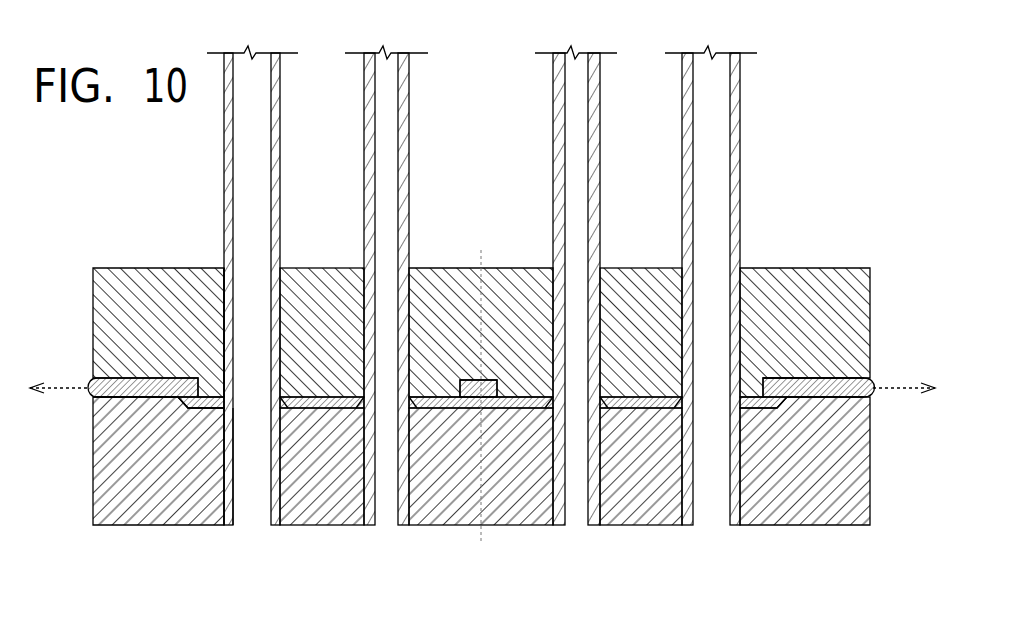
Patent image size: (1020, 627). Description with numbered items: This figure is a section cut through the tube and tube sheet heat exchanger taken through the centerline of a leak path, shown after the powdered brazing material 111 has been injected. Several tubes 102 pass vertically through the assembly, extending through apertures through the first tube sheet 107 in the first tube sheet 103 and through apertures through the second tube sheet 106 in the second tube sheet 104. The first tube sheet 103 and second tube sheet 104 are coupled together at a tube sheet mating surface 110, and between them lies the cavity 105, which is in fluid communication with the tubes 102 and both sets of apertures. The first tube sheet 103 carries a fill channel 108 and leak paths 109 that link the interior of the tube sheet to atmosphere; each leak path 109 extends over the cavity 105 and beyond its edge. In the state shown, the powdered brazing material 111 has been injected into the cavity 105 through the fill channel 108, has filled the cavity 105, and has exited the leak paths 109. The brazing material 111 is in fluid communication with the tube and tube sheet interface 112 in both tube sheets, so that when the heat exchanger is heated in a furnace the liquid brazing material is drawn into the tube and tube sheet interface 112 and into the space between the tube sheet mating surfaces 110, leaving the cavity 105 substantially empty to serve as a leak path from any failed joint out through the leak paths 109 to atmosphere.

The tubes 102 is at (225, 167).
The first tube sheet 103 is at (140, 287).
The second tube sheet 104 is at (117, 500).
The cavity 105 is at (180, 403).
The apertures through the second tube sheet 106 is at (233, 497).
The apertures through the first tube sheet 107 is at (227, 297).
The fill channel 108 is at (471, 379).
The leak paths 109 is at (113, 380).
The tube sheet mating surface 110 is at (818, 392).
The powdered brazing material 111 is at (150, 400).
The tube and tube sheet interface 112 is at (223, 343).